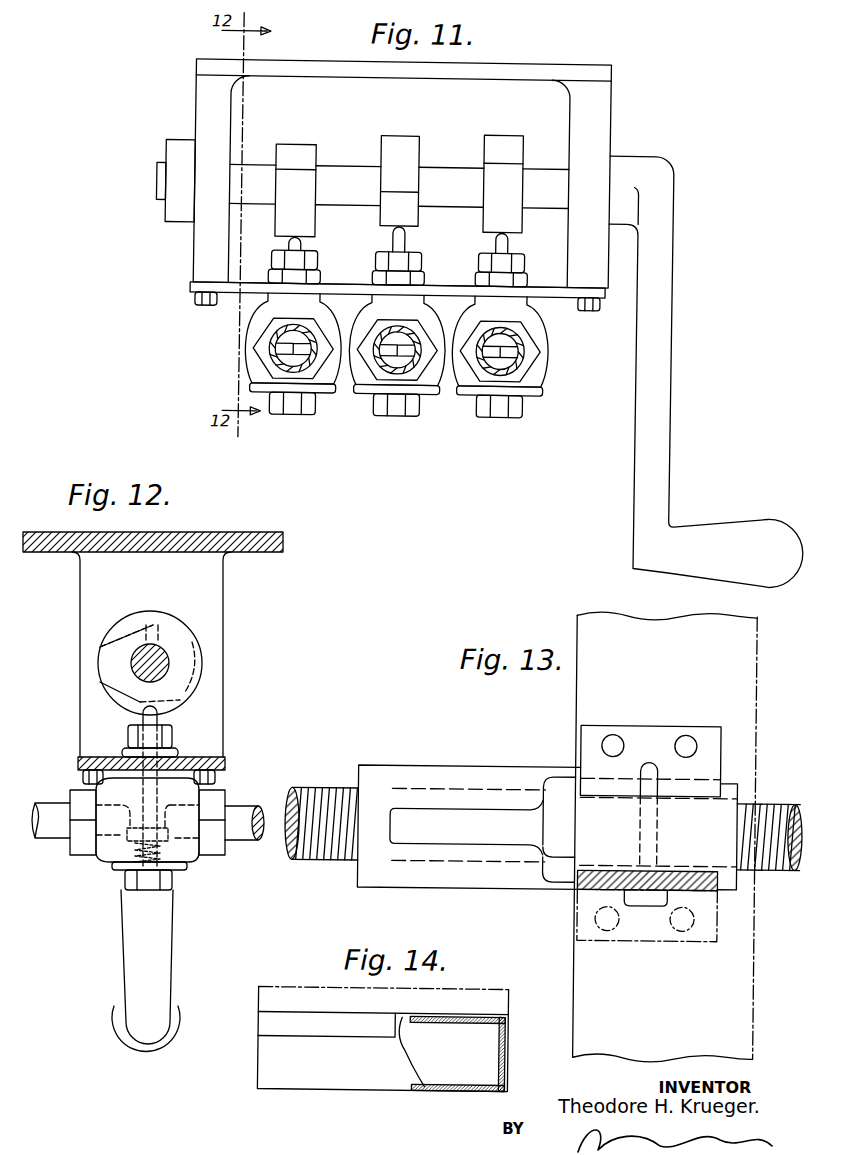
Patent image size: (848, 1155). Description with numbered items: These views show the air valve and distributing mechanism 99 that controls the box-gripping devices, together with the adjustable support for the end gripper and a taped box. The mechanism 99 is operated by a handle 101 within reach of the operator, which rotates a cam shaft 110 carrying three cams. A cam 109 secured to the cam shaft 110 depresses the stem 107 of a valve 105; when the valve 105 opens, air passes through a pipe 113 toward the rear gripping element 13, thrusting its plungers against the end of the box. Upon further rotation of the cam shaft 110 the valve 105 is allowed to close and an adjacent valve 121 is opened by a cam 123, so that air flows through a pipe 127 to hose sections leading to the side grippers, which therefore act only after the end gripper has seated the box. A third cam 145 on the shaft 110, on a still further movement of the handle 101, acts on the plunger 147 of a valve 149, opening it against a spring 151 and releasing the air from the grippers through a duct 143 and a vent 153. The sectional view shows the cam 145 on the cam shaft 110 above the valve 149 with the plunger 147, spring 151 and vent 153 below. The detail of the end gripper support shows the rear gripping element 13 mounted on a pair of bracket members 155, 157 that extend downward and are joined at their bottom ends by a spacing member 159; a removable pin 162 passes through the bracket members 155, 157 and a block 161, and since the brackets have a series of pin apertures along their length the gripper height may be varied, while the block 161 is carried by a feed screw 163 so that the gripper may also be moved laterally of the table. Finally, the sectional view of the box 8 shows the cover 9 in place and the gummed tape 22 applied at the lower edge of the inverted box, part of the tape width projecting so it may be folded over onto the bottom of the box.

In FIG. 11, the air valve and distributing mechanism 99 is at (175, 264).
In FIG. 12, the air valve and distributing mechanism 99 is at (65, 719).
In FIG. 11, the handle 101 is at (662, 359).
In FIG. 12, the handle 101 is at (135, 950).
In FIG. 11, the valve 105 is at (467, 369).
In FIG. 11, the stem 107 is at (500, 246).
In FIG. 11, the cam 109 is at (501, 141).
In FIG. 12, the cam 109 is at (195, 665).
In FIG. 11, the cam shaft 110 is at (441, 181).
In FIG. 12, the cam shaft 110 is at (130, 660).
In FIG. 11, the pipe 113 is at (505, 374).
In FIG. 11, the valve 121 is at (364, 369).
In FIG. 11, the cam 123 is at (397, 145).
In FIG. 12, the cam 123 is at (193, 690).
In FIG. 11, the pipe 127 is at (404, 372).
In FIG. 11, the duct 143 is at (300, 374).
In FIG. 11, the cam 145 is at (296, 154).
In FIG. 12, the cam 145 is at (180, 643).
In FIG. 11, the plunger 147 is at (298, 248).
In FIG. 11, the valve 149 is at (254, 357).
In FIG. 12, the valve 149 is at (113, 847).
In FIG. 12, the spring 151 is at (176, 864).
In FIG. 12, the vent 153 is at (57, 808).
In FIG. 13, the rear gripping element 13 is at (757, 667).
In FIG. 13, the bracket member 155 is at (655, 732).
In FIG. 13, the bracket member 157 is at (650, 940).
In FIG. 13, the spacing member 159 is at (717, 857).
In FIG. 13, the block 161 is at (727, 795).
In FIG. 13, the removable pin 162 is at (637, 815).
In FIG. 13, the feed screw 163 is at (318, 800).
In FIG. 14, the box 8 is at (457, 1004).
In FIG. 14, the cover 9 is at (457, 1093).
In FIG. 14, the gummed tape 22 is at (508, 1033).